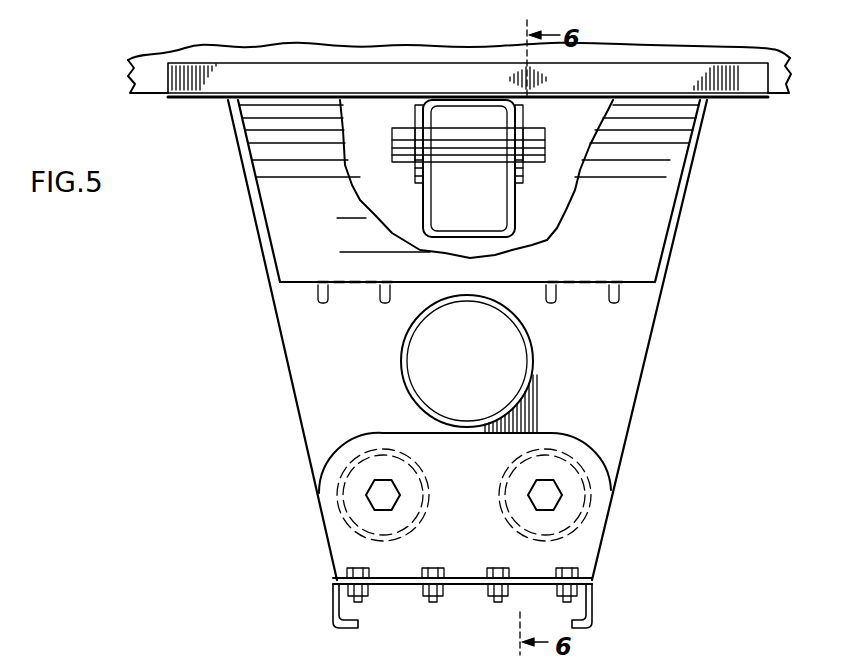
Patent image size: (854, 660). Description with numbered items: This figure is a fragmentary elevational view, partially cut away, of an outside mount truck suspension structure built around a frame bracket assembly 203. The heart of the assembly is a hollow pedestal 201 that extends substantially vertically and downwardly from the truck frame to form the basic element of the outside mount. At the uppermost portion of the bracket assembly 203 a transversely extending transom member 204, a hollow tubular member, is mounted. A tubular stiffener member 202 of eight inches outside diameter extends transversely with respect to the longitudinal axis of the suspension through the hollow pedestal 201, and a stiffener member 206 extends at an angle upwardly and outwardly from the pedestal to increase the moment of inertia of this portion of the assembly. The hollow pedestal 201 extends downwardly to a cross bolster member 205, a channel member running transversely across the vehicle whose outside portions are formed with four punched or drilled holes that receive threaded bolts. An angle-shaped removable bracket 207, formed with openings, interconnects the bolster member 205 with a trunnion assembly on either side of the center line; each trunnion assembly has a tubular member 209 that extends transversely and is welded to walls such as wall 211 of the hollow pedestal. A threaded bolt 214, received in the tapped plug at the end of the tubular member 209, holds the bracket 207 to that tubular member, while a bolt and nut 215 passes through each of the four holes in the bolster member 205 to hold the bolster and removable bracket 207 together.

The hollow pedestal 201 is at (615, 403).
The tubular stiffener member 202 is at (533, 341).
The bracket assembly 203 is at (248, 227).
The transom member 204 is at (432, 203).
The cross bolster member 205 is at (597, 600).
The stiffener member 206 is at (660, 211).
The removable bracket 207 is at (472, 543).
The tubular member 209 is at (594, 490).
The wall 211 is at (283, 335).
The threaded bolt 214 is at (545, 492).
The bolt and nut 215 is at (366, 598).